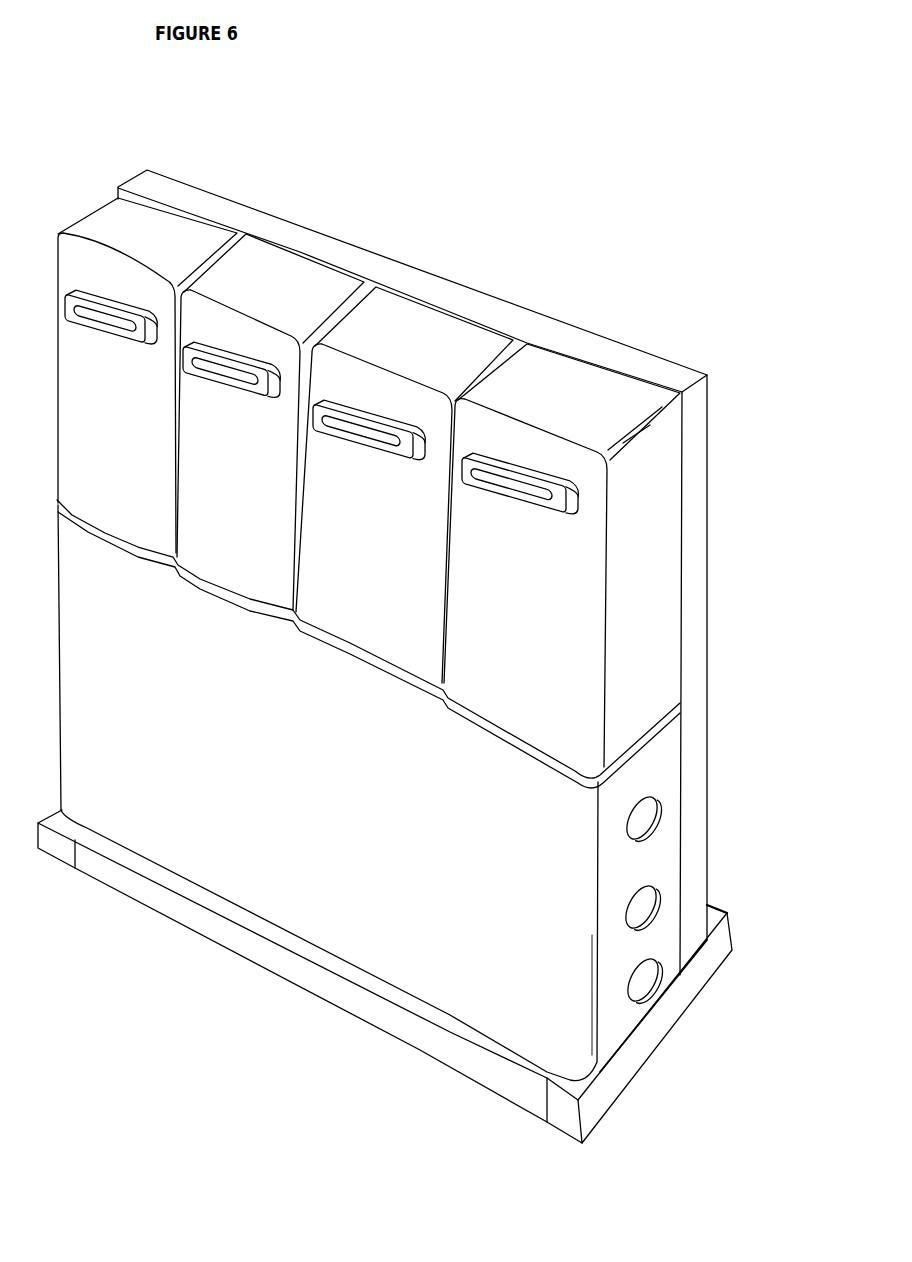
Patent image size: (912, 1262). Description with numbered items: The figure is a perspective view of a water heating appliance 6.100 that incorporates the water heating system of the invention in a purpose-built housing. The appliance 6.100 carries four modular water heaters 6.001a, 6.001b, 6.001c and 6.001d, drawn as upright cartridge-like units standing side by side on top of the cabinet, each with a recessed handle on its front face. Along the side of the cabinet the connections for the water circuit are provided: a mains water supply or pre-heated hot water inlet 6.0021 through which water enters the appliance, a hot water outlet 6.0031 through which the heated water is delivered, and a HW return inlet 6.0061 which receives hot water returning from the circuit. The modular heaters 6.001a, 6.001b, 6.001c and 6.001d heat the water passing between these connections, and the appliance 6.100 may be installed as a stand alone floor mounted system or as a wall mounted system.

The modular water heater 6.001a is at (97, 268).
The modular water heater 6.001b is at (263, 342).
The modular water heater 6.001c is at (375, 370).
The modular water heater 6.001d is at (558, 400).
The appliance 6.100 is at (429, 656).
The hot water outlet 6.0031 is at (663, 792).
The mains water supply or pre-heated hot water inlet 6.0021 is at (660, 888).
The HW return inlet 6.0061 is at (707, 904).